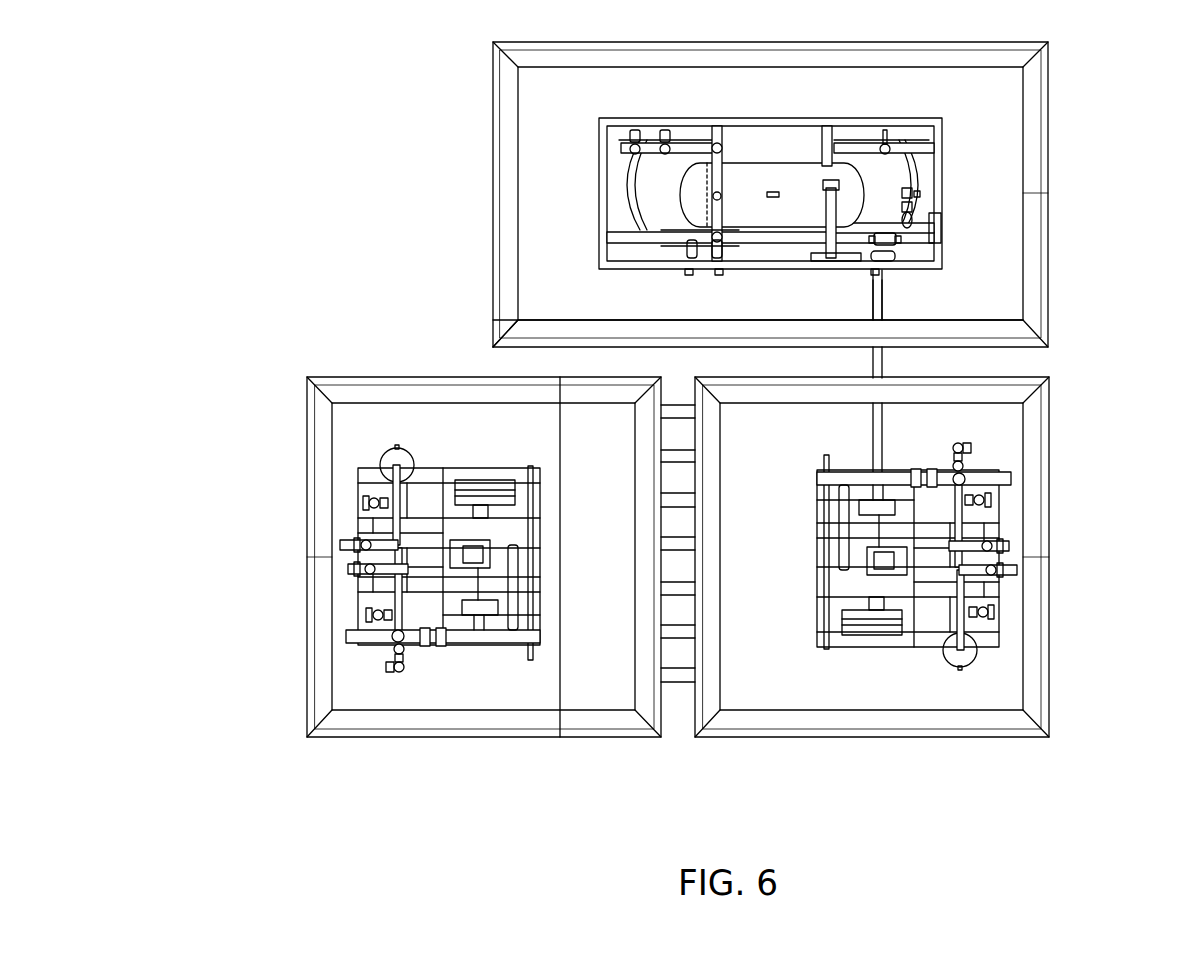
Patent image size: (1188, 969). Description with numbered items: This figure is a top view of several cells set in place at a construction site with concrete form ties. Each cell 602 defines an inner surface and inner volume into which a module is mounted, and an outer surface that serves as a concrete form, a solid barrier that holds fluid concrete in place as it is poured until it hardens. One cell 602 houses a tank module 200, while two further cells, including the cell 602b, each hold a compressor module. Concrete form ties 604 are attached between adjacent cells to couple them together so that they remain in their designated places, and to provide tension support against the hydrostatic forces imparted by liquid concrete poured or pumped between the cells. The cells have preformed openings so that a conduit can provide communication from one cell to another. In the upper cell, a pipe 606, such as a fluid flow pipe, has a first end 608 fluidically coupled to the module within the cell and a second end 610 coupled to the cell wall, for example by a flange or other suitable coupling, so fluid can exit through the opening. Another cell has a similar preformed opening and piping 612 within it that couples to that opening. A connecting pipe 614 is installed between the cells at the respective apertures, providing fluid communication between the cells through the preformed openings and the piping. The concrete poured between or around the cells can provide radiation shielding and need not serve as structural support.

The cell 602 is at (1052, 82).
The enclosure section 602b is at (648, 700).
The tank module 200 is at (935, 182).
The form ties 604 is at (678, 678).
The pipe 606 is at (878, 295).
The first end 608 is at (878, 272).
The second end 610 is at (878, 320).
The piping 612 is at (878, 417).
The connecting pipe 614 is at (878, 367).